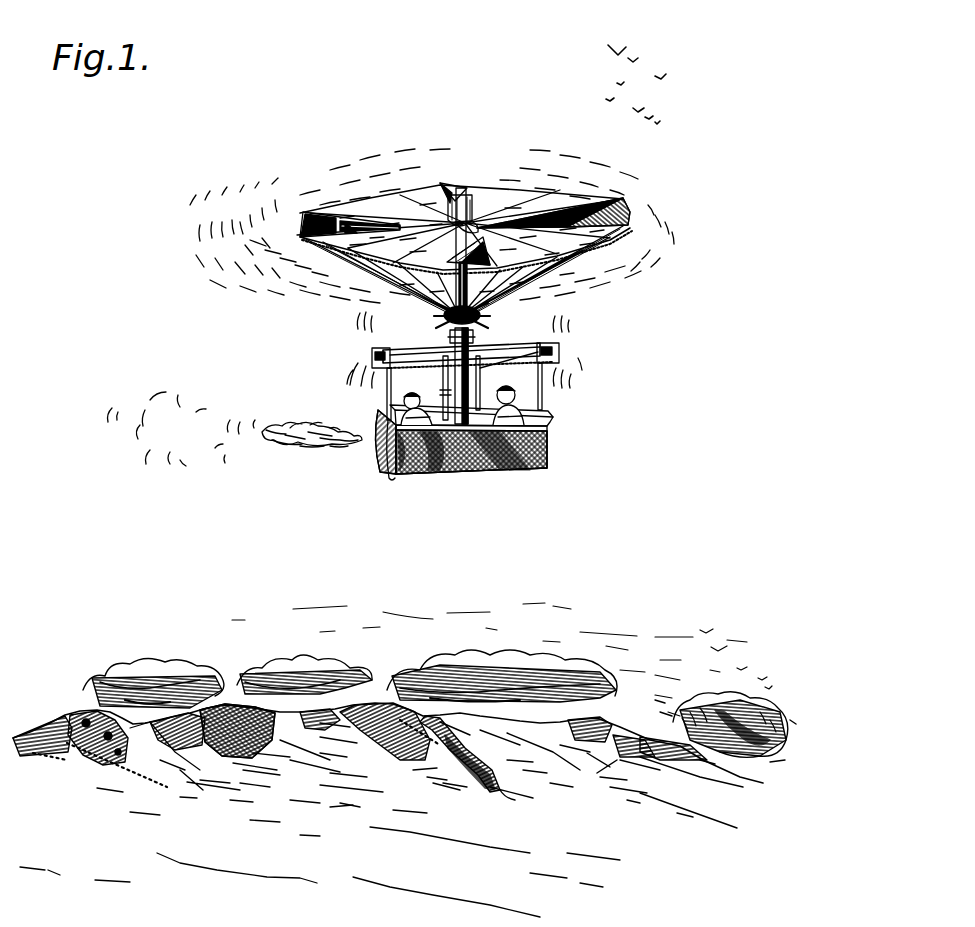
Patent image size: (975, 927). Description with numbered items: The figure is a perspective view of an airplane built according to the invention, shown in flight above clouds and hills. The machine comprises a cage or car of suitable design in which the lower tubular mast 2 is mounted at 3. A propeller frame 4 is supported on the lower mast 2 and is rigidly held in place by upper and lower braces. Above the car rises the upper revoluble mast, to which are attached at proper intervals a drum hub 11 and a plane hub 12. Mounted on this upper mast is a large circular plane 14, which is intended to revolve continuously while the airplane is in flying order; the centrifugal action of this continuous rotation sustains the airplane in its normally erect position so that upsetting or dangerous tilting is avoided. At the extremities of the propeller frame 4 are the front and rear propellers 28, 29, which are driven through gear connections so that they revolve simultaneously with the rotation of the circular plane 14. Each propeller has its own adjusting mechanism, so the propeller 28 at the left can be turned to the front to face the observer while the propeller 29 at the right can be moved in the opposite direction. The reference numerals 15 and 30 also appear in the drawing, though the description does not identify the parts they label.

The lower tubular mast 2 is at (458, 382).
The mounting of the lower mast 3 is at (472, 340).
The propeller frame 4 is at (386, 351).
The drum hub 11 is at (440, 323).
The plane hub 12 is at (443, 267).
The circular plane 14 is at (580, 240).
The rotor blade 15 is at (627, 205).
The front propeller 28 is at (362, 326).
The rear propeller 29 is at (563, 326).
The car skid 30 is at (388, 368).